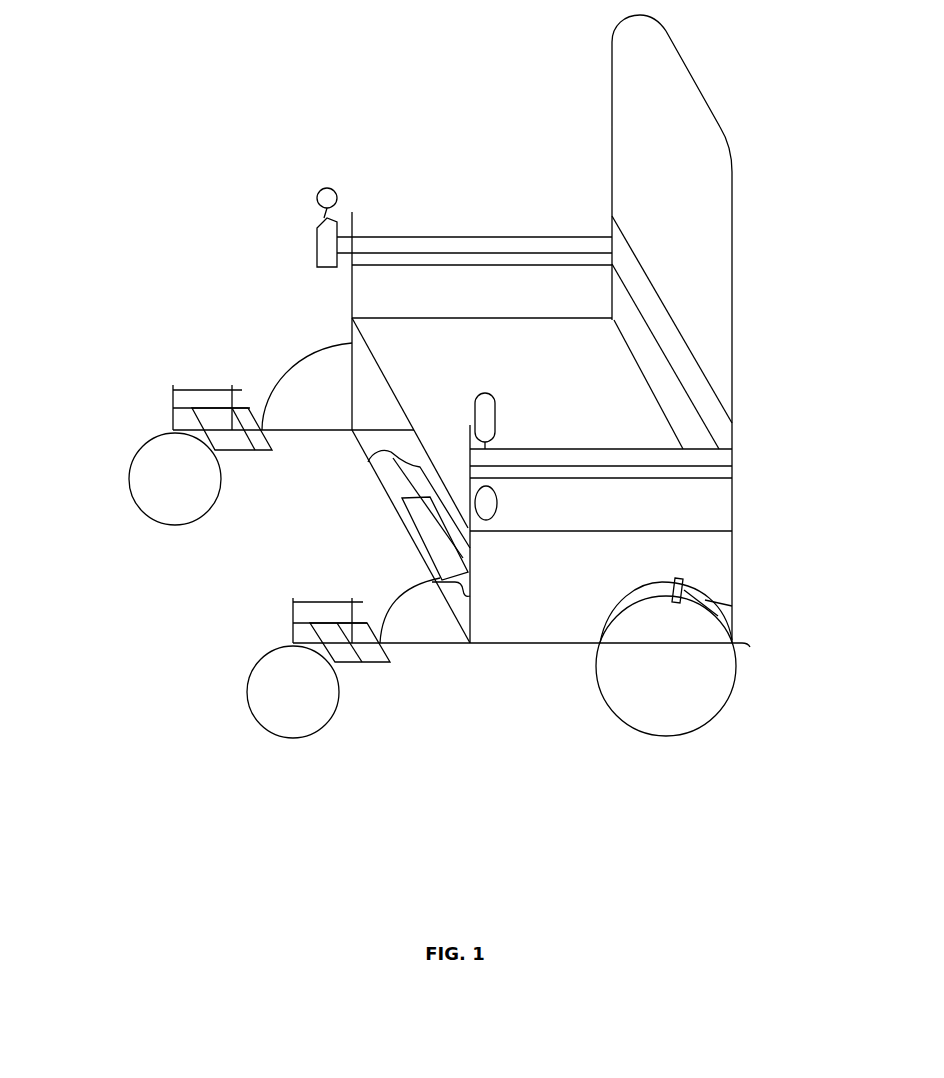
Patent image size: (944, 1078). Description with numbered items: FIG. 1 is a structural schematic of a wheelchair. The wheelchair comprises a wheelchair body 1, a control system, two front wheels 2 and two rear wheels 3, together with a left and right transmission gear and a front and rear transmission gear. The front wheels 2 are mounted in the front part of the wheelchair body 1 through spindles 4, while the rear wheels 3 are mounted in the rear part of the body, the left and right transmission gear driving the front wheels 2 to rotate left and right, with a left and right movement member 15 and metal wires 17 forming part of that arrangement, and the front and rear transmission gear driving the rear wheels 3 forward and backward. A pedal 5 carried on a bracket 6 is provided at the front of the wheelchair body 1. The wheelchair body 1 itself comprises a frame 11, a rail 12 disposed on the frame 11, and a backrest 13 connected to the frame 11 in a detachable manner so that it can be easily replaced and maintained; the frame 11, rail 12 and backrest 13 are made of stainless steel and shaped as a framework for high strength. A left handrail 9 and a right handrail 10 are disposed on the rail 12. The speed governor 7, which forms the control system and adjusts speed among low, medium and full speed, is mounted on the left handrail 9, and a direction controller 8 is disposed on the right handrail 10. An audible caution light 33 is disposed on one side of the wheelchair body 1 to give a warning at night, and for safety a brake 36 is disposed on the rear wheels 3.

The wheelchair body 1 is at (533, 628).
The front wheel 2 is at (170, 483).
The rear wheel 3 is at (664, 697).
The spindle 4 is at (173, 403).
The pedal 5 is at (248, 412).
The bracket 6 is at (243, 392).
The speed governor 7 is at (478, 412).
The direction controller 8 is at (327, 242).
The left handrail 9 is at (625, 457).
The right handrail 10 is at (500, 242).
The frame 11 is at (732, 555).
The rail 12 is at (717, 502).
The backrest 13 is at (705, 302).
The left and right movement member 15 is at (435, 535).
The metal wire 17 is at (405, 477).
The audible caution light 33 is at (486, 506).
The brake 36 is at (683, 582).